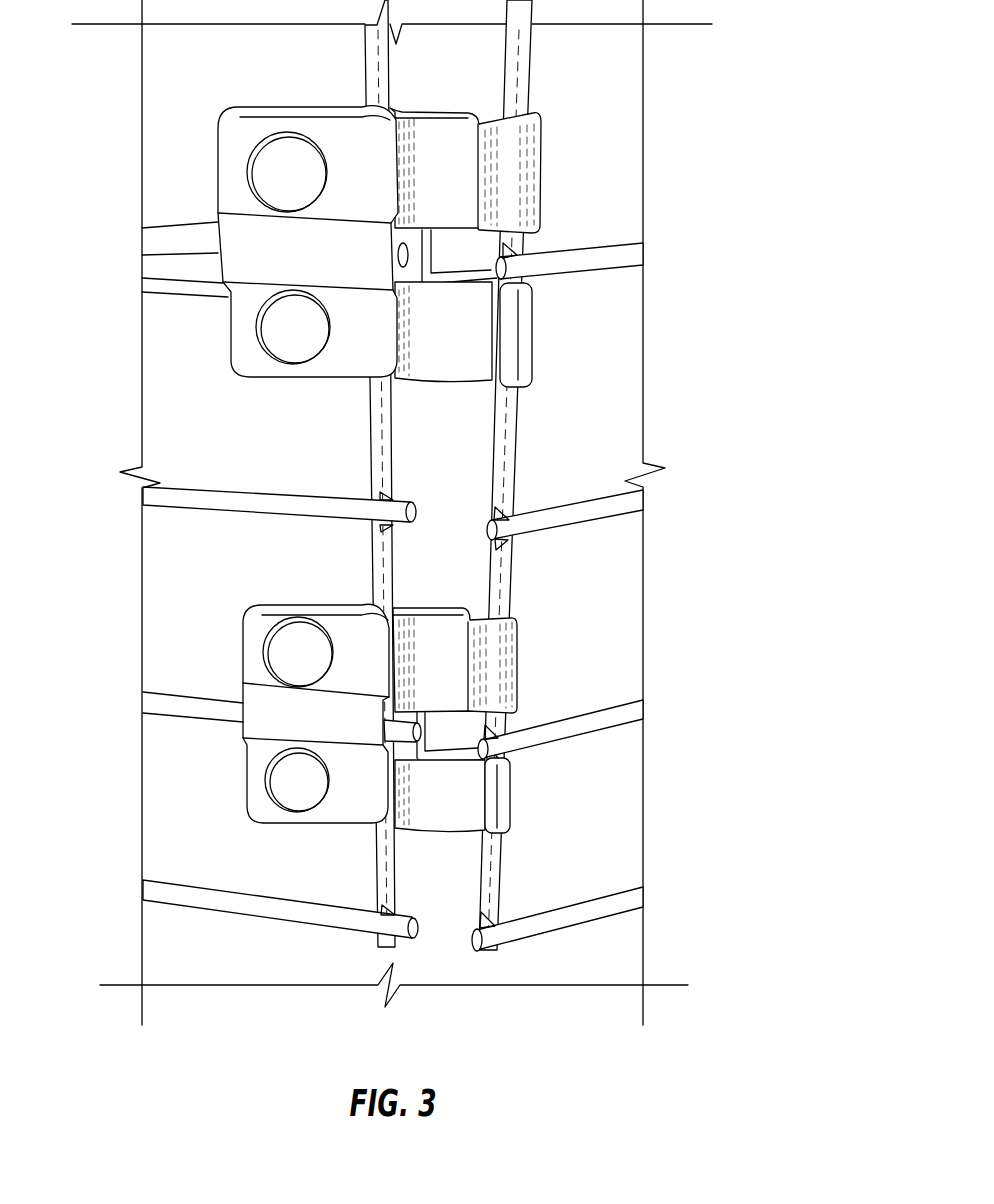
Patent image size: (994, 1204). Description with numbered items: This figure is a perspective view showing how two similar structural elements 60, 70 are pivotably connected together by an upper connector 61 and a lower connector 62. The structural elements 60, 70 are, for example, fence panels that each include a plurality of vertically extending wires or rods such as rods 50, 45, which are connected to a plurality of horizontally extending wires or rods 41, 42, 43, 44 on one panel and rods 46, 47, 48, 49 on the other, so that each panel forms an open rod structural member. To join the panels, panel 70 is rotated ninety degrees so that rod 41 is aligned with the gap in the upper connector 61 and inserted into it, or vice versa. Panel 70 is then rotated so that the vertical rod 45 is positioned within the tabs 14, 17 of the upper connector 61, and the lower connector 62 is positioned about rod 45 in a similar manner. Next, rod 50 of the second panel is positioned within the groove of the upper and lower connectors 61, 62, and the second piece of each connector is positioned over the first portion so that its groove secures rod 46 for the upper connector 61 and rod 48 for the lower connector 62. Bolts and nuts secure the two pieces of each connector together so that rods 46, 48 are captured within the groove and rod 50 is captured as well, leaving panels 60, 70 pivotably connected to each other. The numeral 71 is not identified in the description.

The tab 14 is at (538, 193).
The tab 17 is at (525, 348).
The horizontally extending rod 41 is at (620, 250).
The horizontally extending rod 42 is at (617, 495).
The horizontally extending rod 43 is at (620, 705).
The horizontally extending rod 44 is at (628, 893).
The vertically extending rod 45 is at (512, 450).
The horizontally extending rod 46 is at (152, 229).
The horizontally extending rod 47 is at (177, 487).
The horizontally extending rod 48 is at (163, 695).
The horizontally extending rod 49 is at (162, 882).
The vertically extending rod 50 is at (375, 440).
The structural element 60 is at (155, 820).
The upper connector 61 is at (535, 143).
The lower connector 62 is at (517, 640).
The structural element 70 is at (618, 80).
The rail 71 is at (108, 357).